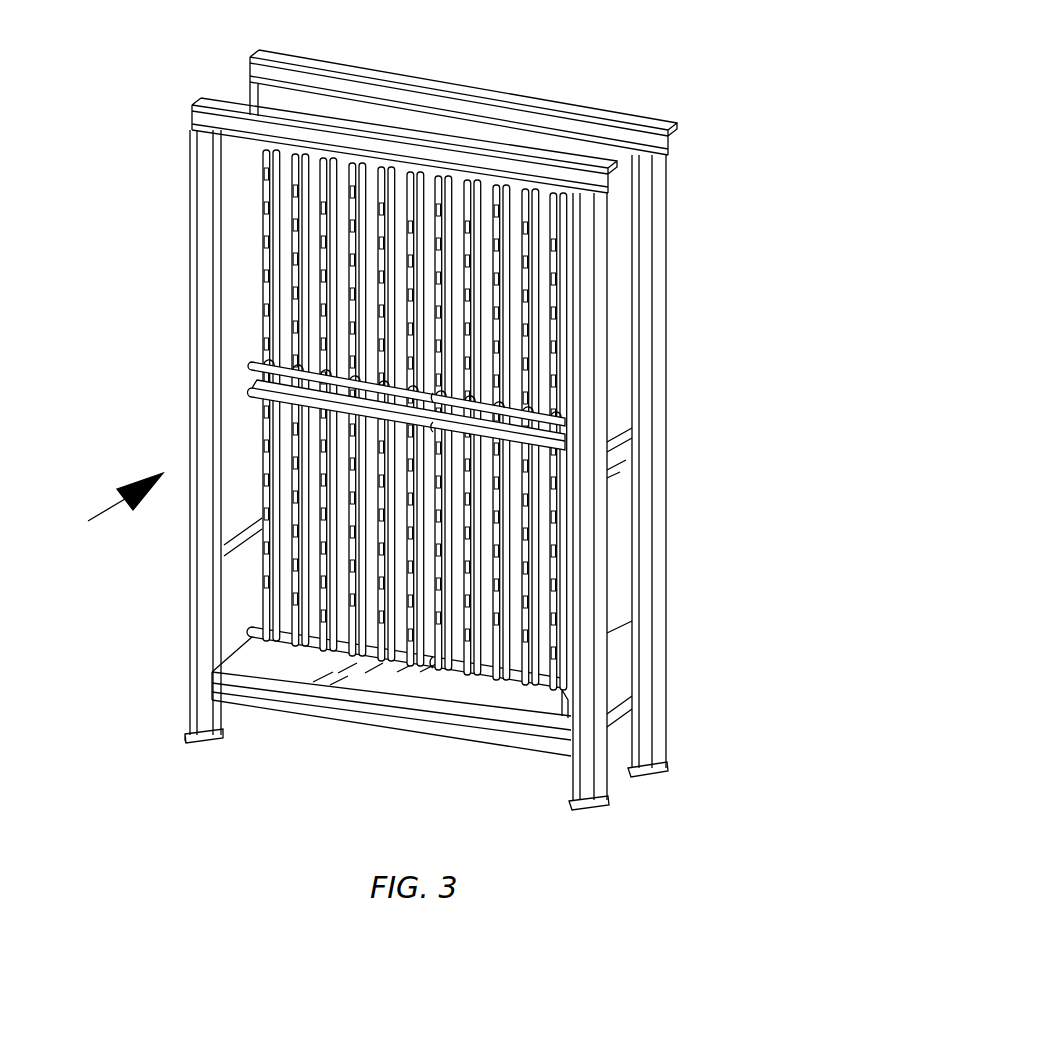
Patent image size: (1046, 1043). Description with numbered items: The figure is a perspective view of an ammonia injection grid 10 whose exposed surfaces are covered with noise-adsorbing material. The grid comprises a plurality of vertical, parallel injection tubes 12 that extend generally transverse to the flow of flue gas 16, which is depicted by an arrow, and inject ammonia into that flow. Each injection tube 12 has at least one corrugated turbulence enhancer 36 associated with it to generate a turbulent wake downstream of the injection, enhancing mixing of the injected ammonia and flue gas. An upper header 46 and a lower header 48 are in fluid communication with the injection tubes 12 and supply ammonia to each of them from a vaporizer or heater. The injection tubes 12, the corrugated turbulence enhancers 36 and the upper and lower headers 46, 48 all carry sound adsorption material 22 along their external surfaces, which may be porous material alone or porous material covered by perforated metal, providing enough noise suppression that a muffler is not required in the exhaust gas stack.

The ammonia injection grid 10 is at (663, 61).
The injection tube 12 is at (322, 622).
The flow of flue gas 16 is at (97, 516).
The sound adsorption material 22 is at (428, 492).
The corrugated turbulence enhancer 36 is at (262, 184).
The upper header 46 is at (258, 400).
The lower header 48 is at (560, 420).